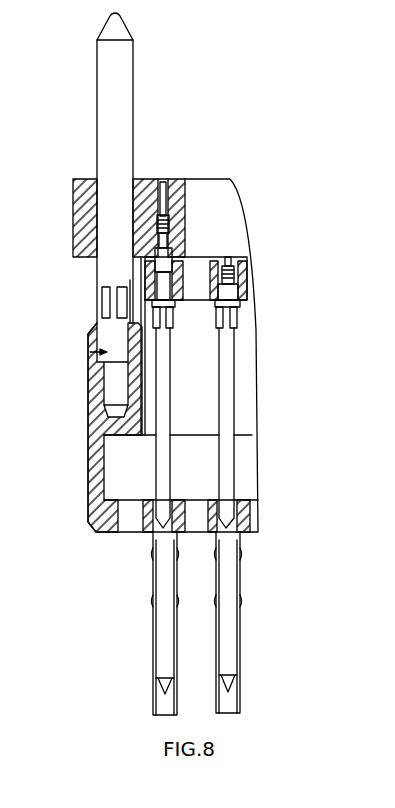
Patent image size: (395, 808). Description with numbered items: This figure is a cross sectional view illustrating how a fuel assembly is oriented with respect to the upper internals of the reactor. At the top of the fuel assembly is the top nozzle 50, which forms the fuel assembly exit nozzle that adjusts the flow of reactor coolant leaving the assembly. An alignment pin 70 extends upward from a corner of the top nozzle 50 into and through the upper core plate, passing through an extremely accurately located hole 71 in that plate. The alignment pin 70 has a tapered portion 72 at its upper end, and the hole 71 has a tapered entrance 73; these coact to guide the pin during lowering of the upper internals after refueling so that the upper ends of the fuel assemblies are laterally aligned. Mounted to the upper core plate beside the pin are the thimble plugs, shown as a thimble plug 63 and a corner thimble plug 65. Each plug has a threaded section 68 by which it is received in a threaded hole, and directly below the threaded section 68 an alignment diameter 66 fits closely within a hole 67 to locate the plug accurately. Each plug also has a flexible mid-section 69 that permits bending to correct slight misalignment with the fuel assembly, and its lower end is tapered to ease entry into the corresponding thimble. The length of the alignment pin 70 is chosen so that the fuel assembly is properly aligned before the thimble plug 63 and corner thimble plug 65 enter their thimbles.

The nozzle 50 is at (88, 484).
The thimble plug 63 is at (231, 565).
The corner thimble plug 65 is at (162, 599).
The alignment diameter 66 is at (172, 262).
The hole 67 is at (176, 248).
The threaded section 68 is at (160, 224).
The flexible mid-section 69 is at (222, 360).
The alignment pin 70 is at (128, 117).
The hole 71 is at (146, 193).
The tapered portion 72 is at (121, 24).
The tapered entrance 73 is at (94, 253).